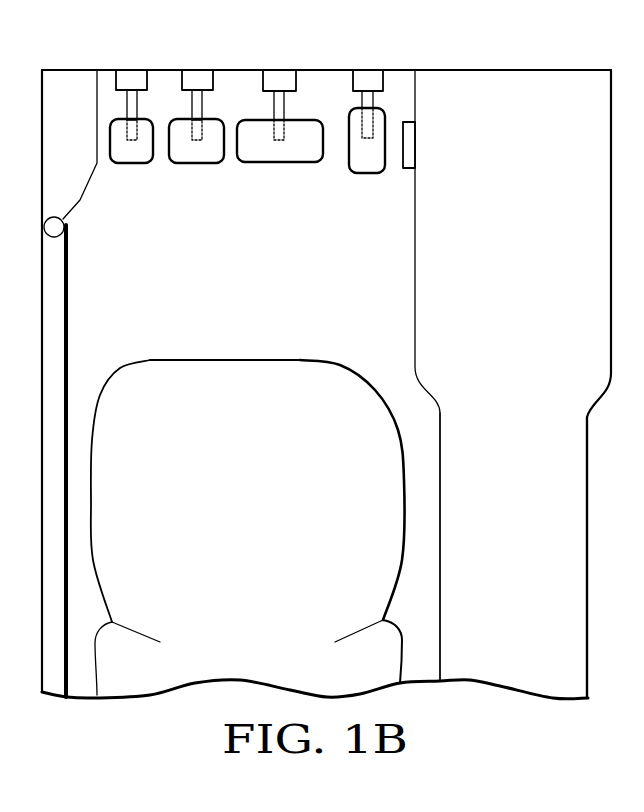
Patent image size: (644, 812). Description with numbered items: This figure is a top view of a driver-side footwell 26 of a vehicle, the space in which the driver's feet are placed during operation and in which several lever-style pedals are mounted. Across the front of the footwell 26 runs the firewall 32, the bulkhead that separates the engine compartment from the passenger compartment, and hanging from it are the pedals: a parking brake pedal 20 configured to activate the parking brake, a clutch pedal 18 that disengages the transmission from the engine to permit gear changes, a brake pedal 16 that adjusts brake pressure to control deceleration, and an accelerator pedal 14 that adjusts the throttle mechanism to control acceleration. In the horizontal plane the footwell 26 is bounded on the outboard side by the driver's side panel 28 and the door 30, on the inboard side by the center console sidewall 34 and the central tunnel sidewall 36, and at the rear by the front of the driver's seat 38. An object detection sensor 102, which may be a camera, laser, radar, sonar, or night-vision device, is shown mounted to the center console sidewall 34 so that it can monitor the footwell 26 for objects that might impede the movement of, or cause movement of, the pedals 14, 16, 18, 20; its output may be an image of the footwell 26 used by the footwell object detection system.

The accelerator pedal 14 is at (365, 173).
The brake pedal 16 is at (280, 163).
The clutch pedal 18 is at (195, 163).
The parking brake pedal 20 is at (130, 163).
The driver-side footwell 26 is at (230, 300).
The driver's side panel 28 is at (80, 200).
The door 30 is at (68, 383).
The firewall 32 is at (165, 70).
The center console sidewall 34 is at (415, 342).
The central tunnel sidewall 36 is at (440, 498).
The driver's seat 38 is at (245, 358).
The object detection sensor 102 is at (415, 143).